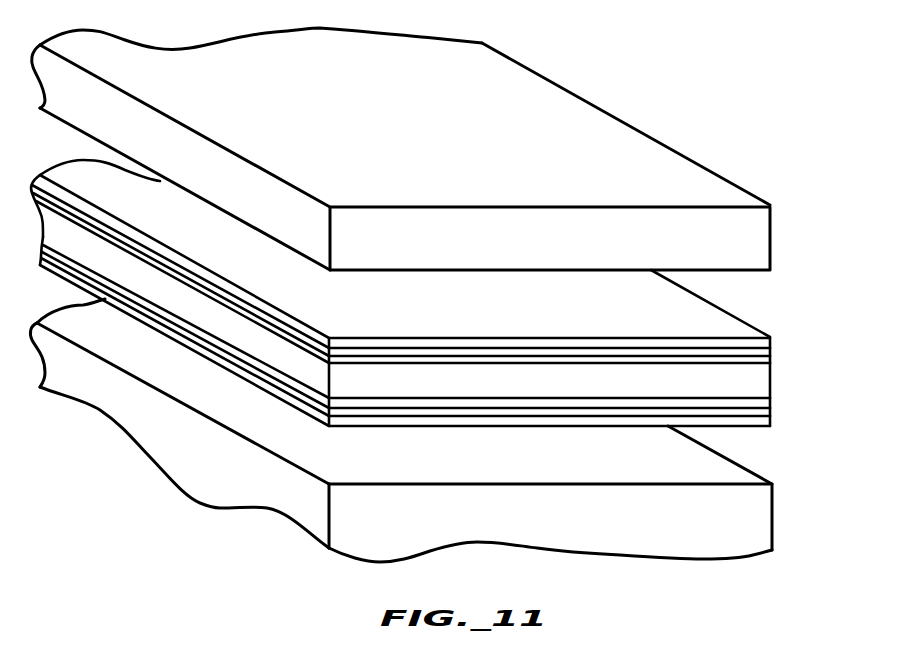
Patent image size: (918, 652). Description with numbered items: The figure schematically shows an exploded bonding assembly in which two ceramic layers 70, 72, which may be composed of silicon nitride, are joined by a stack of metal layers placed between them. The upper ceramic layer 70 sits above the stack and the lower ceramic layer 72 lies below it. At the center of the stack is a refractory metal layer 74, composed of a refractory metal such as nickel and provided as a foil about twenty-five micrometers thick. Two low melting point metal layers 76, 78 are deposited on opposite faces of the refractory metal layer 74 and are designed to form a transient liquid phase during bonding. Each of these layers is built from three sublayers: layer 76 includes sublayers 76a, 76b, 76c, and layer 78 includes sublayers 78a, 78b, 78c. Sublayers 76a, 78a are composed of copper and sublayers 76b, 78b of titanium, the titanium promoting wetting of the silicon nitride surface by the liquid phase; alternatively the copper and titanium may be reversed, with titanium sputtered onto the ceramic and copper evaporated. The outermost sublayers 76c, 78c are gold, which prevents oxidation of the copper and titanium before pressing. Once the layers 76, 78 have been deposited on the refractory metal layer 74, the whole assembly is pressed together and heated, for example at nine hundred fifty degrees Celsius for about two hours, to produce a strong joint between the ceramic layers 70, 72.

The ceramic layer 70 is at (762, 248).
The ceramic layer 72 is at (762, 515).
The refractory metal layer 74 is at (758, 387).
The low melting point metal layer 76 is at (445, 261).
The copper sublayer 76a is at (740, 313).
The titanium sublayer 76b is at (756, 353).
The gold sublayer 76c is at (745, 342).
The low melting point metal layer 78 is at (448, 372).
The copper sublayer 78a is at (760, 402).
The titanium sublayer 78b is at (748, 422).
The gold sublayer 78c is at (745, 430).